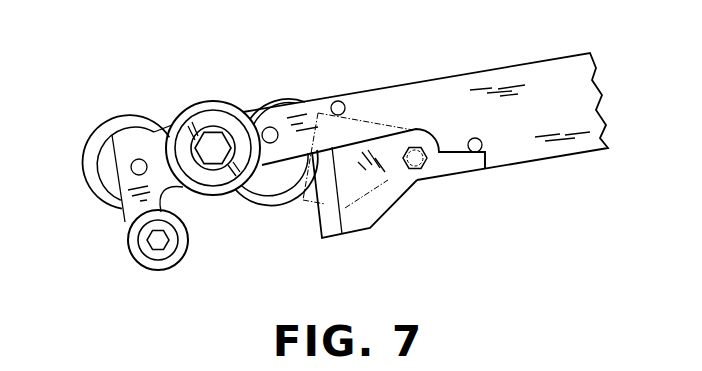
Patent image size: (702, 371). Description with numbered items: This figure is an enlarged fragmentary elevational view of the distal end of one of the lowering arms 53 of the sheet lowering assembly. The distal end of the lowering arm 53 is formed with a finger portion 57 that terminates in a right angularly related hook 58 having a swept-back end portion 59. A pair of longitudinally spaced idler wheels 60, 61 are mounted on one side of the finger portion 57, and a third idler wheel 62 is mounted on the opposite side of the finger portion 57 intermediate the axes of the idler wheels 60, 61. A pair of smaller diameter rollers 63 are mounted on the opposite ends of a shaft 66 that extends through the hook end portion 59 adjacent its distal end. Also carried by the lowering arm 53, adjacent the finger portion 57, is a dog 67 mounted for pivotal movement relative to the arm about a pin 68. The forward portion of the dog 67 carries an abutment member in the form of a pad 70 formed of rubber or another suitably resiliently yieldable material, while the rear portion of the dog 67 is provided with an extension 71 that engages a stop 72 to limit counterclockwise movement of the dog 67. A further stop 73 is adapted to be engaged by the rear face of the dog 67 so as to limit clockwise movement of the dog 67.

The lowering arm 53 is at (512, 82).
The finger portion 57 is at (287, 150).
The hook 58 is at (118, 172).
The swept-back end portion 59 is at (135, 207).
The idler wheel 60 is at (292, 92).
The idler wheel 61 is at (97, 152).
The third idler wheel 62 is at (183, 115).
The roller 63 is at (142, 260).
The shaft 66 is at (167, 245).
The dog 67 is at (370, 228).
The pin 68 is at (425, 170).
The pad 70 is at (327, 220).
The extension 71 is at (472, 170).
The stop 72 is at (487, 143).
The stop 73 is at (347, 100).